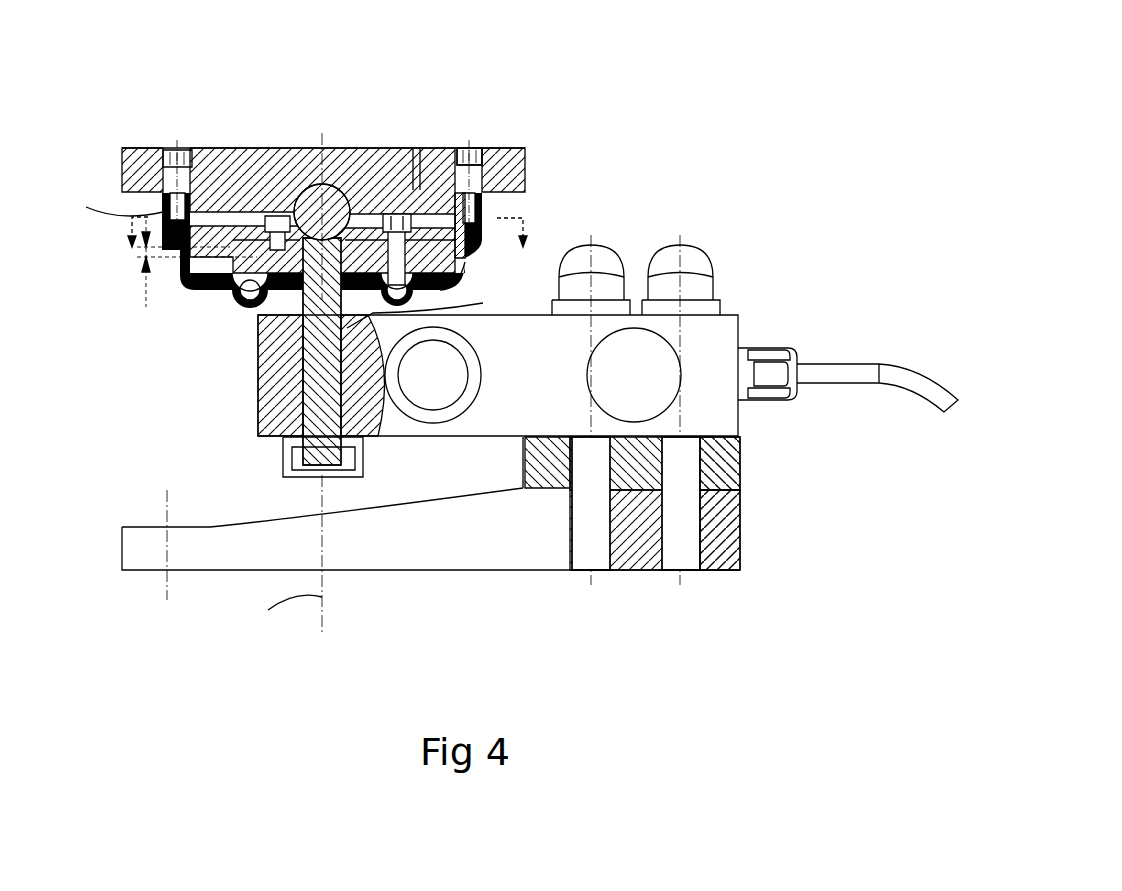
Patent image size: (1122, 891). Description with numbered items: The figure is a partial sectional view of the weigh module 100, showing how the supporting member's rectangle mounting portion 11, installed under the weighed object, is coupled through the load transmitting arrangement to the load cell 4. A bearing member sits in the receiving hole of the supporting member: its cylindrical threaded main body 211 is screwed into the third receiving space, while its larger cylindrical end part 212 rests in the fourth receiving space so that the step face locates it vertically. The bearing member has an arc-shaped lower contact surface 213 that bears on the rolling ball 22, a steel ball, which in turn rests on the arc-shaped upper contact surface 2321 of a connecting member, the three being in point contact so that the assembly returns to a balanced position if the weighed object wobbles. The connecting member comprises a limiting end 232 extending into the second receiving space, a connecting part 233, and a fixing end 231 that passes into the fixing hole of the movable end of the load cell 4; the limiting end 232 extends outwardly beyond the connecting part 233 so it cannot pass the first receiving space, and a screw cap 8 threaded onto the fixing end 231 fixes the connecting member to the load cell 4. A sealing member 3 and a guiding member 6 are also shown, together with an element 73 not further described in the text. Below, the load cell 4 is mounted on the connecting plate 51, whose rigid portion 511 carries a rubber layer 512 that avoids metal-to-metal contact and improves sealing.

The weigh module 100 is at (338, 66).
The rectangle mounting portion 11 is at (150, 180).
The rolling ball 22 is at (333, 148).
The lower contact surface 213 is at (310, 147).
The end part 212 is at (227, 148).
The main body 211 is at (383, 148).
The sealing member 3 is at (477, 252).
The limiting end 232 is at (300, 315).
The upper contact surface 2321 is at (247, 303).
The connecting part 233 is at (457, 283).
The seal lip 73 is at (487, 205).
The guiding member 6 is at (480, 192).
The load cell 4 is at (717, 363).
The fixing end 231 is at (290, 378).
The screw cap 8 is at (290, 463).
The connecting plate 51 is at (906, 455).
The rigid portion 511 is at (745, 462).
The rubber layer 512 is at (745, 488).